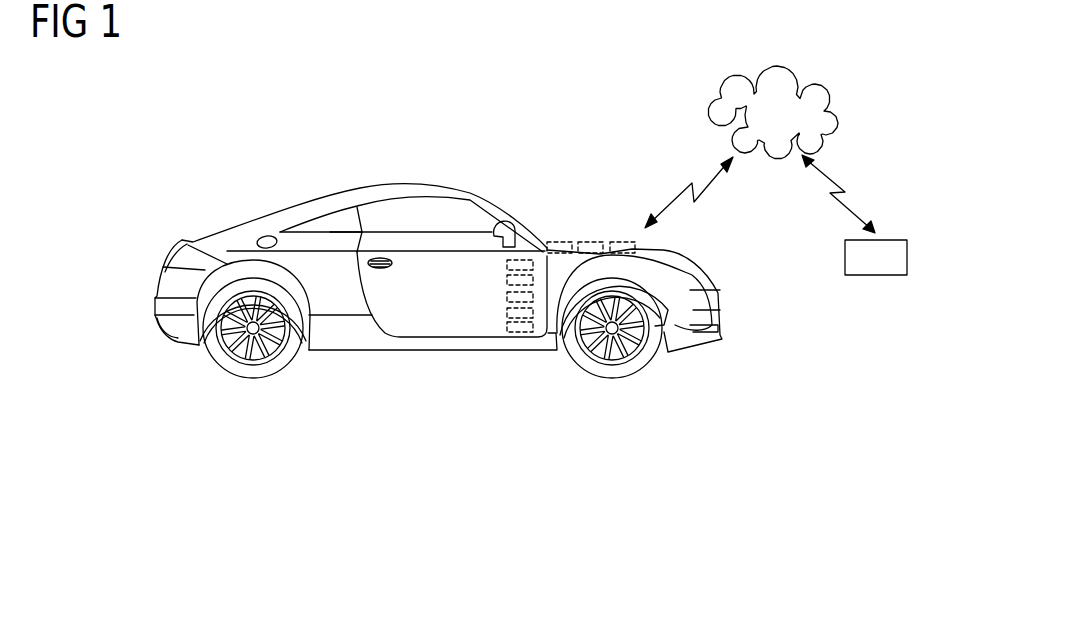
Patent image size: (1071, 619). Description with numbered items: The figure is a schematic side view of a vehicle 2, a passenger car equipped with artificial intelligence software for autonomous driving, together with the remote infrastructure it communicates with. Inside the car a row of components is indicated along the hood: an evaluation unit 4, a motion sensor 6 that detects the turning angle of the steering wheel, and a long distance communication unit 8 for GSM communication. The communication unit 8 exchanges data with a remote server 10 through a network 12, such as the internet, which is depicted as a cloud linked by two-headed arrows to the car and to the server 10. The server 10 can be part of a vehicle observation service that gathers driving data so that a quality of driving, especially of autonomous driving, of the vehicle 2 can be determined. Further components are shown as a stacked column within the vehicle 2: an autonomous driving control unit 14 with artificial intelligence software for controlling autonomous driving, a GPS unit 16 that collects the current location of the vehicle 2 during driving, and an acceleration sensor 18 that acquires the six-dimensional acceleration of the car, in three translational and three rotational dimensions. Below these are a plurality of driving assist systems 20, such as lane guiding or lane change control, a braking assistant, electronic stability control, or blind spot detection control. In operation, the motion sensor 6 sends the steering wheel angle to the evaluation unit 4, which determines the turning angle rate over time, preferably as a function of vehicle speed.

The vehicle 2 is at (430, 172).
The evaluation unit 4 is at (597, 241).
The motion sensor 6 is at (560, 241).
The long distance communication unit 8 is at (630, 241).
The remote server 10 is at (867, 272).
The network 12 is at (712, 108).
The autonomous driving control unit 14 is at (507, 265).
The GPS unit 16 is at (507, 281).
The acceleration sensor 18 is at (507, 296).
The driving assist systems 20 is at (507, 313).